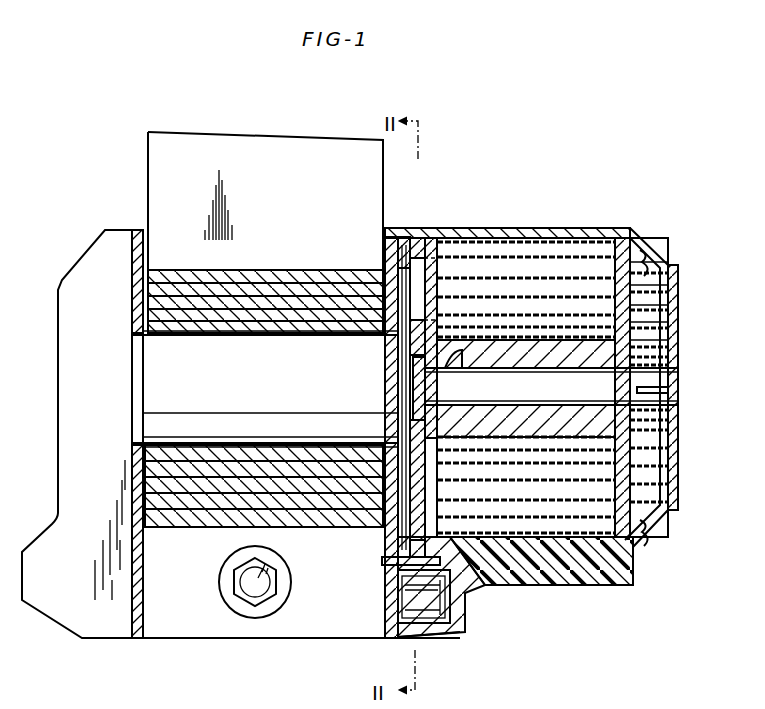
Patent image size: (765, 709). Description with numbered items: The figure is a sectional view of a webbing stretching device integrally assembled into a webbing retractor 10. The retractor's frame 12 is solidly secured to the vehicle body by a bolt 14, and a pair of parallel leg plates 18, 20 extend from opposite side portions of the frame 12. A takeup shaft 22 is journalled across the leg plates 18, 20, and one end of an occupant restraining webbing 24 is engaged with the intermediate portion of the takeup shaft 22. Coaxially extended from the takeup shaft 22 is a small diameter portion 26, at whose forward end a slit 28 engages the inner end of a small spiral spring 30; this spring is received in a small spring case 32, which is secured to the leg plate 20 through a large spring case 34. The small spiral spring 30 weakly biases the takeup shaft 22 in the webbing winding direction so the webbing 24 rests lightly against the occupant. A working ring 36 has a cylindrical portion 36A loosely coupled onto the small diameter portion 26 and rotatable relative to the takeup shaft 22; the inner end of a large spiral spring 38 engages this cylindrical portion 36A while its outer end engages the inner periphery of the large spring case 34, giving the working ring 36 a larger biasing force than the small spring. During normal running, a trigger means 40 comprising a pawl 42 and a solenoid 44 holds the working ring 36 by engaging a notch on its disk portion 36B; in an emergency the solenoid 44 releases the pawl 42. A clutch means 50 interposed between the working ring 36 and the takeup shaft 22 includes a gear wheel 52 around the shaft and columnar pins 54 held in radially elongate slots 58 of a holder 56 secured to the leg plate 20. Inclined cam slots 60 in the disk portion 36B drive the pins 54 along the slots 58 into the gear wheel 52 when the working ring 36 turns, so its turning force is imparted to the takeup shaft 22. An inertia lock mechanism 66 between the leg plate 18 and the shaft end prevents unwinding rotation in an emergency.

The webbing retractor 10 is at (432, 182).
The frame 12 is at (308, 638).
The bolt 14 is at (250, 585).
The leg plate 18 is at (140, 554).
The leg plate 20 is at (388, 614).
The takeup shaft 22 is at (298, 340).
The occupant restraining webbing 24 is at (252, 270).
The small diameter portion 26 is at (662, 386).
The slit 28 is at (668, 400).
The small spiral spring 30 is at (660, 322).
The small spring case 32 is at (680, 268).
The large spring case 34 is at (590, 230).
The working ring 36 is at (447, 288).
The cylindrical portion 36A is at (620, 357).
The disk portion 36B is at (467, 373).
The large spiral spring 38 is at (626, 238).
The trigger means 40 is at (478, 628).
The pawl 42 is at (385, 556).
The solenoid 44 is at (460, 615).
The clutch means 50 is at (382, 264).
The gear wheel 52 is at (412, 325).
The pins 54 is at (420, 270).
The holder 56 is at (406, 262).
The slots 58 is at (378, 300).
The slots 60 is at (440, 262).
The inertia lock mechanism 66 is at (105, 630).